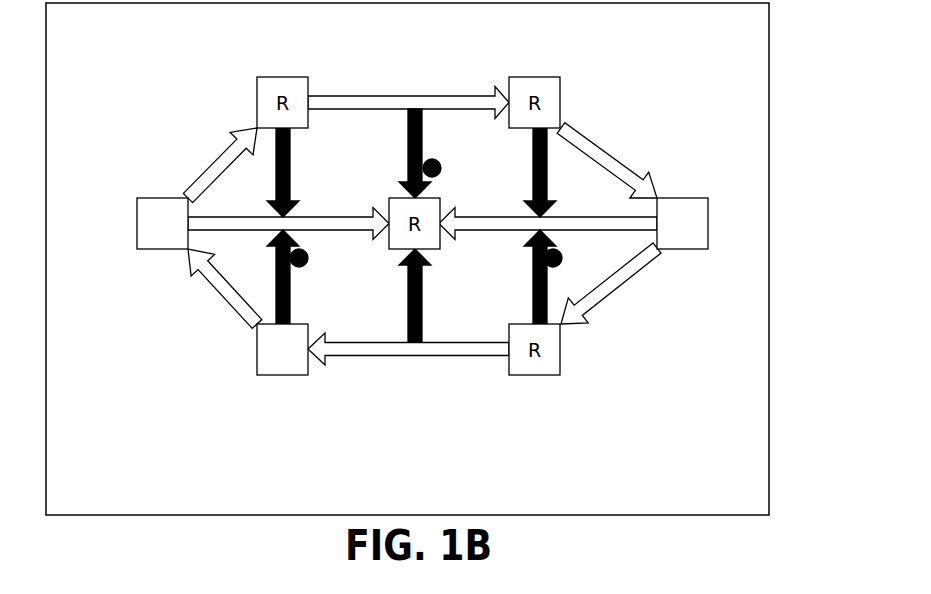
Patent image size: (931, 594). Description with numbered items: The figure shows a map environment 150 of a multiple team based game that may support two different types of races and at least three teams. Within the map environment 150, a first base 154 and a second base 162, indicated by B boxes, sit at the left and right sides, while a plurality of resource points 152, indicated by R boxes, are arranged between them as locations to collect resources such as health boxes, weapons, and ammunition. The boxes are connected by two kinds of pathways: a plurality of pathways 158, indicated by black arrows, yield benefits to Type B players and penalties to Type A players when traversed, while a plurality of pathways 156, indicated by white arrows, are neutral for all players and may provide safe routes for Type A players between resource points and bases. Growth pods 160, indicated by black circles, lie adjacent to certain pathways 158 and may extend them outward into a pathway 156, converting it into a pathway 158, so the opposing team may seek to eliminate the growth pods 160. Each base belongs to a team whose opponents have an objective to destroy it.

The map environment 150 is at (769, 332).
The resource point 152 is at (308, 375).
The first base 154 is at (137, 249).
The pathway 156 is at (223, 295).
The pathway 158 is at (290, 175).
The growth pod 160 is at (305, 264).
The second base 162 is at (707, 249).